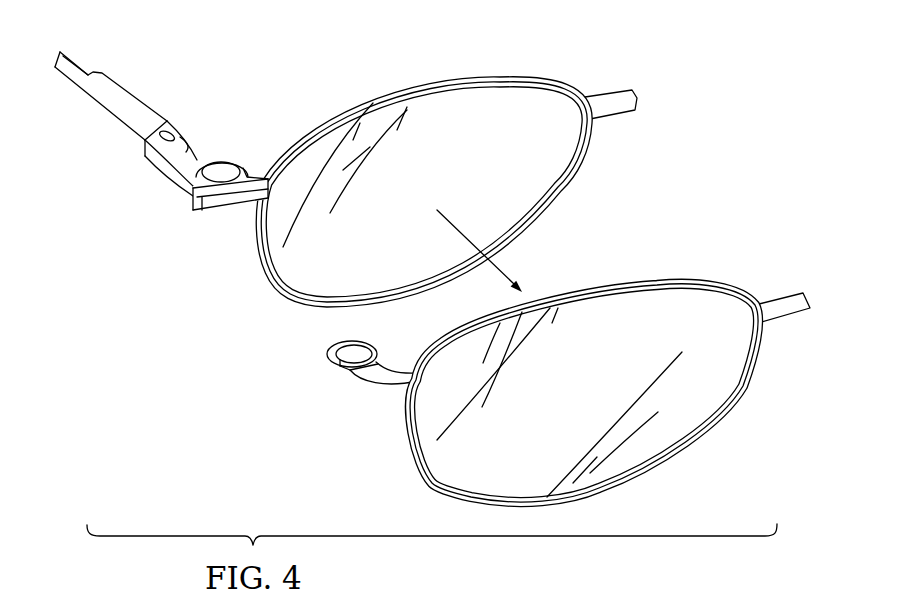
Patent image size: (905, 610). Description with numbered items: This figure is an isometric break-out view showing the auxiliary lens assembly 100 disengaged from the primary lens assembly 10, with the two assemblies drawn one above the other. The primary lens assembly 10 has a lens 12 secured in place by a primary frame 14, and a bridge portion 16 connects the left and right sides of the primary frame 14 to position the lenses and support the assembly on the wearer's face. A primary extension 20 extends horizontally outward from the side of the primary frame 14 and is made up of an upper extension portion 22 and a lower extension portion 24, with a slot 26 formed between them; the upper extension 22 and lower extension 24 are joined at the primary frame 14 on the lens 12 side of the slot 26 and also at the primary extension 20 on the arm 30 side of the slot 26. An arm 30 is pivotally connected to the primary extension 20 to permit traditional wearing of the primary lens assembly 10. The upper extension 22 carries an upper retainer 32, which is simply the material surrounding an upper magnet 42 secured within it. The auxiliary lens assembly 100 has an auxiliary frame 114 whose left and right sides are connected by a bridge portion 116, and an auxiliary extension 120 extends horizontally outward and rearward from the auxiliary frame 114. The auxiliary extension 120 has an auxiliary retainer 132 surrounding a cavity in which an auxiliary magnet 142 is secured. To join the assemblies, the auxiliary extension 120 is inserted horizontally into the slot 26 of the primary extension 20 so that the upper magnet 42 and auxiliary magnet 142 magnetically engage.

The primary lens assembly 10 is at (331, 88).
The lens 12 is at (543, 160).
The primary frame 14 is at (500, 78).
The bridge portion 16 is at (610, 92).
The primary extension 20 is at (170, 176).
The upper extension portion 22 is at (257, 178).
The lower extension portion 24 is at (218, 213).
The slot 26 is at (198, 207).
The arm 30 is at (98, 107).
The upper retainer 32 is at (208, 158).
The upper magnet 42 is at (221, 165).
The auxiliary lens assembly 100 is at (672, 494).
The auxiliary frame 114 is at (656, 284).
The bridge portion 116 is at (776, 302).
The auxiliary extension 120 is at (371, 386).
The auxiliary retainer 132 is at (328, 350).
The auxiliary magnet 142 is at (343, 365).